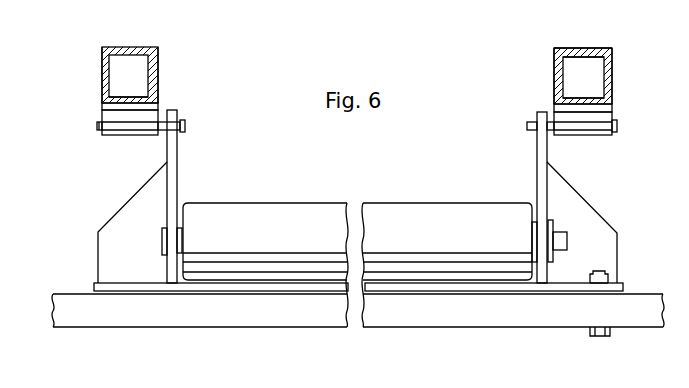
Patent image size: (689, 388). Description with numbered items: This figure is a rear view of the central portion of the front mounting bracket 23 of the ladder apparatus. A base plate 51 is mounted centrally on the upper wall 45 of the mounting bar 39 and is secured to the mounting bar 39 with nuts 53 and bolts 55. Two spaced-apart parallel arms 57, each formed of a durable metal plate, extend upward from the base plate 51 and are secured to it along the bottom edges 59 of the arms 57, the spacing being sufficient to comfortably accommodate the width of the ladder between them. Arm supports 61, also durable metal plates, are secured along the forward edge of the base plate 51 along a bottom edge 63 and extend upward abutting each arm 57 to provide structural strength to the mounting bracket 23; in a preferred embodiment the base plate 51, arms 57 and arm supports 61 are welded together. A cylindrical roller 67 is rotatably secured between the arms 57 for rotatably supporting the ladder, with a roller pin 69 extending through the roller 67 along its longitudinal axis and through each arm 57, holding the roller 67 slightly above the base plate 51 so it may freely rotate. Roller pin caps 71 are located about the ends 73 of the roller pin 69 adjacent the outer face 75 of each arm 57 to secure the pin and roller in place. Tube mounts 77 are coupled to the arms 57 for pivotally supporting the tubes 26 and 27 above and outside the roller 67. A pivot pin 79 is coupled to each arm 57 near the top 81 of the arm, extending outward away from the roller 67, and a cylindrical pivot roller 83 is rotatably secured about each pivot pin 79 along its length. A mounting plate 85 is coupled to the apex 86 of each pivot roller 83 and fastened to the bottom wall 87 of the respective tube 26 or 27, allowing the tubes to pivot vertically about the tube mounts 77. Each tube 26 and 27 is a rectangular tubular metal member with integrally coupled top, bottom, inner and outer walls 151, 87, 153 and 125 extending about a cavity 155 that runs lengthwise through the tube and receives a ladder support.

The front mounting bracket 23 is at (70, 237).
The tube 26 is at (556, 50).
The tube 27 is at (122, 46).
The mounting bar 39 is at (320, 298).
The upper wall 45 is at (510, 298).
The base plate 51 is at (425, 293).
The nut 53 is at (612, 282).
The bolt 55 is at (598, 272).
The arm 57 is at (548, 155).
The bottom edge 59 is at (172, 291).
The arm support 61 is at (590, 236).
The bottom edge 63 is at (136, 283).
The roller 67 is at (435, 203).
The roller pin 69 is at (533, 243).
The roller pin cap 71 is at (550, 228).
The end 73 is at (572, 243).
The outer face 75 is at (165, 188).
The tube mount 77 is at (97, 131).
The pivot pin 79 is at (99, 121).
The top 81 is at (174, 110).
The pivot roller 83 is at (127, 136).
The mounting plate 85 is at (146, 88).
The apex 86 is at (101, 52).
The bottom wall 87 is at (135, 93).
The outer wall 125 is at (614, 53).
The top wall 151 is at (567, 49).
The inner wall 153 is at (555, 72).
The cavity 155 is at (590, 70).